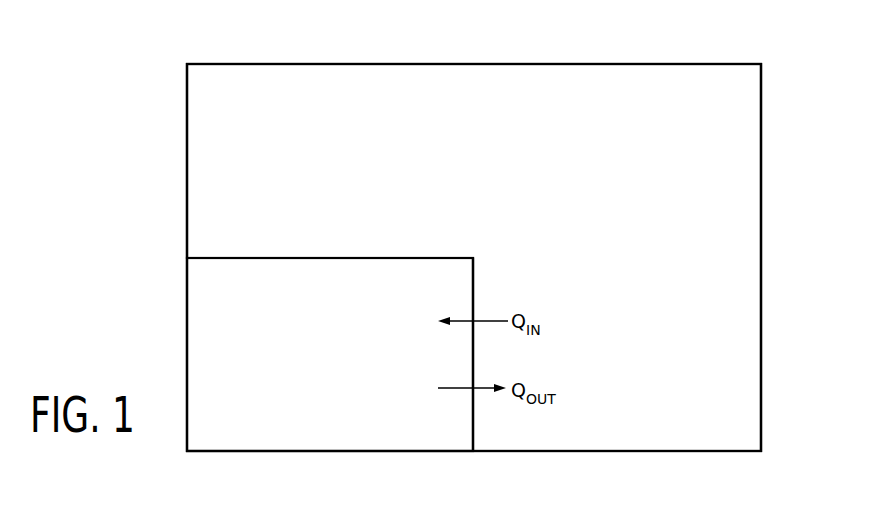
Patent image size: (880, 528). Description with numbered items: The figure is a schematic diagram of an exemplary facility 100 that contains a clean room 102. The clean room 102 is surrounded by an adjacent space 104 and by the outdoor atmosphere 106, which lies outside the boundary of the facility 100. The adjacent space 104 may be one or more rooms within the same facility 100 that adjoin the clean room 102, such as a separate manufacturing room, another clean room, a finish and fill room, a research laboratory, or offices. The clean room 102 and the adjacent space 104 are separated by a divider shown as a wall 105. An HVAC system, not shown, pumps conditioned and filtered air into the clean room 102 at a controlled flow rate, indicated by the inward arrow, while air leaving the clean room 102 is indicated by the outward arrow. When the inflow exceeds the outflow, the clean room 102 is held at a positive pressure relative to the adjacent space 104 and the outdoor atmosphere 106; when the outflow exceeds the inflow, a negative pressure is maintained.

The facility 100 is at (776, 92).
The clean room 102 is at (341, 368).
The adjacent space 104 is at (591, 168).
The wall 105 is at (475, 284).
The outdoor atmosphere 106 is at (495, 19).